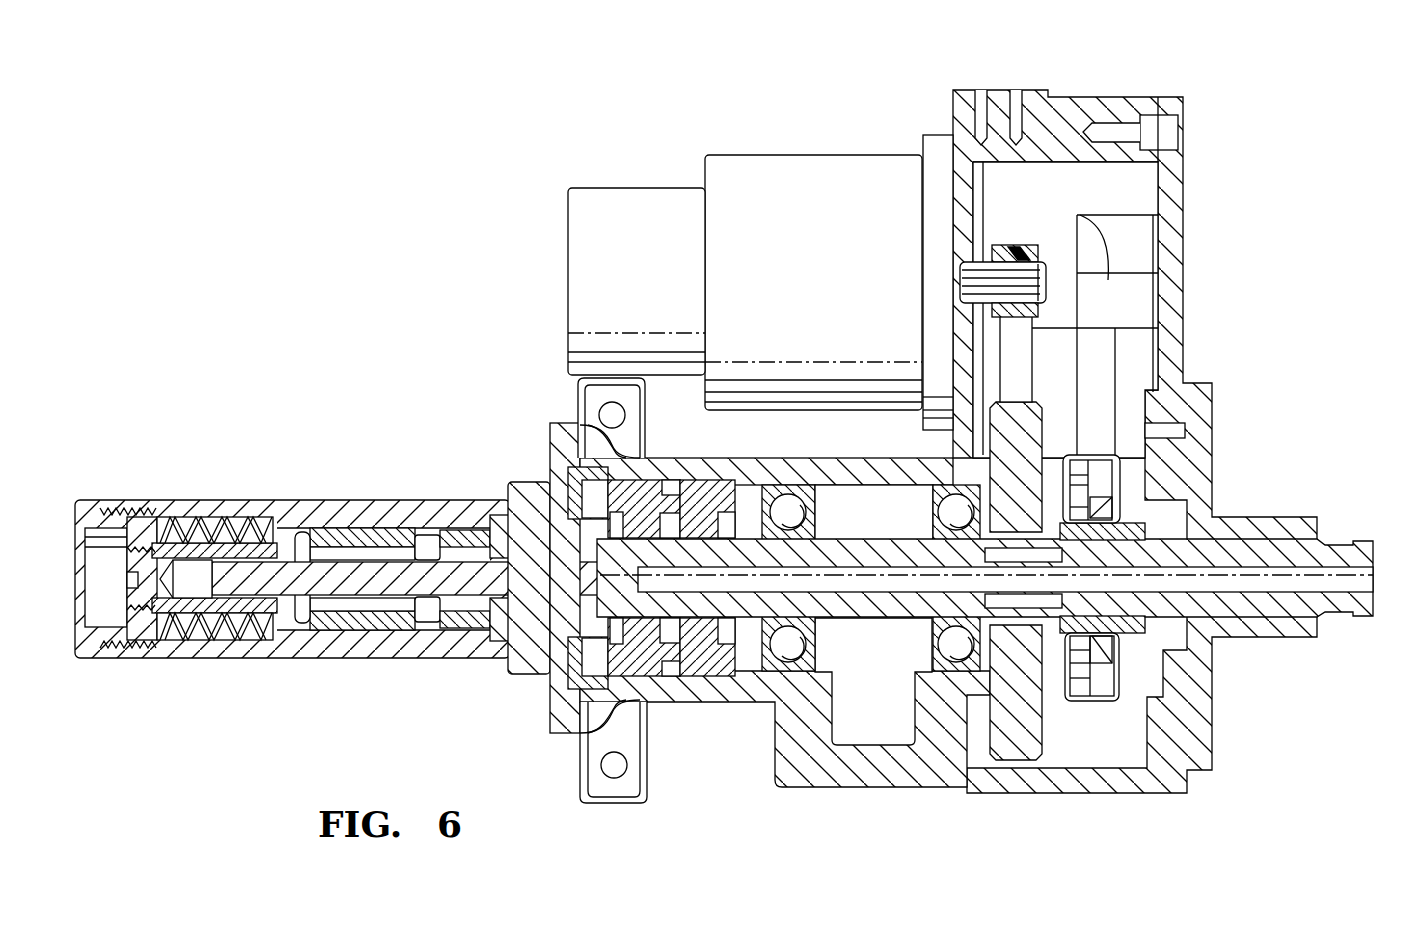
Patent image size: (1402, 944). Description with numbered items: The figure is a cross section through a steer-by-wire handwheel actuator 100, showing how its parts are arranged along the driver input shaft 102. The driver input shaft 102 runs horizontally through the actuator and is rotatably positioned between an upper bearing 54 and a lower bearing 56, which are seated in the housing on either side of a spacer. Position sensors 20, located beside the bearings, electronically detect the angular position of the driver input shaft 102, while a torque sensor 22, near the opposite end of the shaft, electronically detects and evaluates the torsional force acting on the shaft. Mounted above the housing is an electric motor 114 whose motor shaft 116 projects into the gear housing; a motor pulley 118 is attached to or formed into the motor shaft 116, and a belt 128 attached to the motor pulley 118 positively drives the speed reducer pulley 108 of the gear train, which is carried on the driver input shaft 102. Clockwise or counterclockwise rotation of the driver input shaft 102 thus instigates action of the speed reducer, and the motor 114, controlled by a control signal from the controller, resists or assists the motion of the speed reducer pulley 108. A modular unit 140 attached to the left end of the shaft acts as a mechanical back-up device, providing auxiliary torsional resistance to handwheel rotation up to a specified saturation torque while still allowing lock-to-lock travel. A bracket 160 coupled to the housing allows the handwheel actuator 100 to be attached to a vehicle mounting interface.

The handwheel actuator 100 is at (734, 449).
The electric motor 114 is at (810, 165).
The motor pulley 118 is at (1035, 252).
The motor shaft 116 is at (1040, 288).
The belt 128 is at (1023, 353).
The bracket 160 is at (592, 408).
The modular unit 140 is at (339, 494).
The driver input shaft 102 is at (1343, 600).
The position sensors 20 is at (712, 672).
The lower bearing 56 is at (775, 667).
The upper bearing 54 is at (935, 668).
The speed reducer pulley 108 is at (1005, 736).
The torque sensor 22 is at (1105, 686).